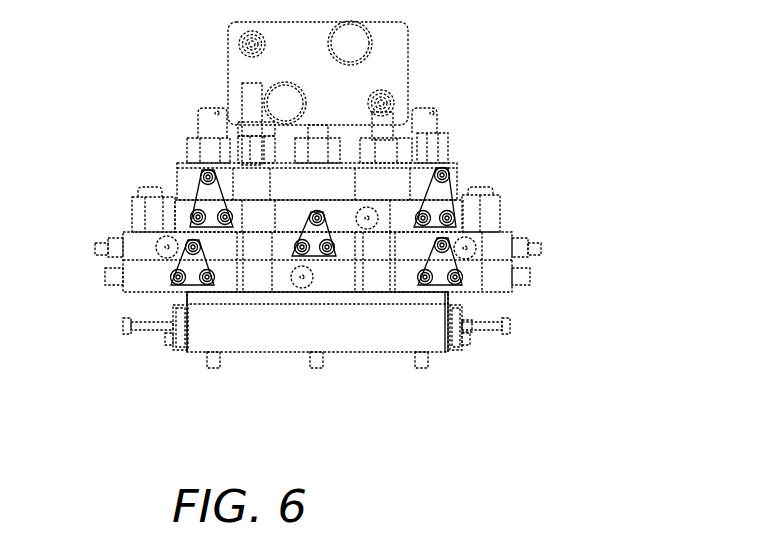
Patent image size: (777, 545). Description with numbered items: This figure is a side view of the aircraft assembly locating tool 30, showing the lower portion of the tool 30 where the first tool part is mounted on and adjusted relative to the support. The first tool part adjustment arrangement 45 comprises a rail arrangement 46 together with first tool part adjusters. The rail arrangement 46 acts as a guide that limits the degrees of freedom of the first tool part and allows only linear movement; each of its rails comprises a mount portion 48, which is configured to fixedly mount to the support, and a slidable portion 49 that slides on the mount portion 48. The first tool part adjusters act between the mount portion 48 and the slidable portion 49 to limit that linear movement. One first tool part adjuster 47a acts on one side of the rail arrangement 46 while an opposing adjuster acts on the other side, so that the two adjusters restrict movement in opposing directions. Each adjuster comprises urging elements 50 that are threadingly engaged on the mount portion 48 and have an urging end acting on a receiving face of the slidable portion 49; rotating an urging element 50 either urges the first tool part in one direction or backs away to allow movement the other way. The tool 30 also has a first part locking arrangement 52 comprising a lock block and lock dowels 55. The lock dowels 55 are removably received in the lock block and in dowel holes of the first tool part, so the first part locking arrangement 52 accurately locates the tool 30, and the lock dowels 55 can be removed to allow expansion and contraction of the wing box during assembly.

The tool 30 is at (558, 75).
The first tool part adjustment arrangement 45 is at (582, 325).
The rail arrangement 46 is at (455, 308).
The first tool part adjuster 47a is at (123, 326).
The mount portion 48 is at (178, 340).
The slidable portion 49 is at (192, 305).
The urging element 50 is at (482, 328).
The first part locking arrangement 52 is at (390, 342).
The lock dowel 55 is at (315, 358).